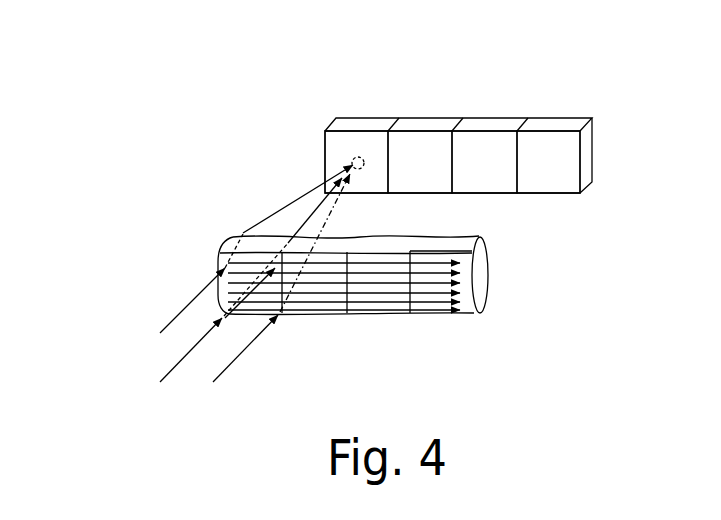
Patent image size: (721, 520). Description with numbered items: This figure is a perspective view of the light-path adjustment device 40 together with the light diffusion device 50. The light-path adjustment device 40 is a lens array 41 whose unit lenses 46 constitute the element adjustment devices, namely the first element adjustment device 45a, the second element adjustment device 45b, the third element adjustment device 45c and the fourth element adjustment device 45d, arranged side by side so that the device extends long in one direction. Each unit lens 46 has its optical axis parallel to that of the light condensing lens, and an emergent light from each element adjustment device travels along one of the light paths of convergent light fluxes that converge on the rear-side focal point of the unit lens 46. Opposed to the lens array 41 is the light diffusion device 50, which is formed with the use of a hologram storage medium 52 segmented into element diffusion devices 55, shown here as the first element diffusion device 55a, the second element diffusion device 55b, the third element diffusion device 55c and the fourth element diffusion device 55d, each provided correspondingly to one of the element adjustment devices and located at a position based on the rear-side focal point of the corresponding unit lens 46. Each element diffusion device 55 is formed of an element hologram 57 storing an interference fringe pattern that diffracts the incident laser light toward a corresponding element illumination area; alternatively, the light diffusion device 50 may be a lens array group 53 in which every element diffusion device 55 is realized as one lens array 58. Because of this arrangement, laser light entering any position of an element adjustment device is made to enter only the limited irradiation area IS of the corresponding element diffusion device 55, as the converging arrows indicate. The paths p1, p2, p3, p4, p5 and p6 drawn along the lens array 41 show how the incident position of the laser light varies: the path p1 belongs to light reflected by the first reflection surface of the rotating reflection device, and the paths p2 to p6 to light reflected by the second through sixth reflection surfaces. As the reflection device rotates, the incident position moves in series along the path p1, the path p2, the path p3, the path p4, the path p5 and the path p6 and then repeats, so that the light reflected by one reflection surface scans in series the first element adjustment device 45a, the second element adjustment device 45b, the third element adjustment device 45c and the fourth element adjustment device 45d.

The light-path adjustment device 40 is at (365, 284).
The lens array 41 is at (365, 284).
The first element adjustment device 45a is at (240, 247).
The second element adjustment device 45b is at (333, 238).
The third element adjustment device 45c is at (390, 240).
The fourth element adjustment device 45d is at (460, 242).
The unit lens 46 is at (212, 241).
The light diffusion device 50 is at (442, 137).
The hologram storage medium 52 is at (442, 137).
The lens array group 53 is at (590, 77).
The element diffusion device 55 is at (440, 155).
The first element diffusion device 55a is at (333, 143).
The second element diffusion device 55b is at (416, 137).
The third element diffusion device 55c is at (482, 143).
The fourth element diffusion device 55d is at (562, 186).
The element hologram 57 is at (440, 155).
The lens array 58 is at (440, 155).
The limited irradiation area IS is at (361, 157).
The path p1 is at (445, 303).
The path p2 is at (417, 310).
The path p3 is at (393, 283).
The path p4 is at (368, 292).
The path p5 is at (333, 304).
The path p6 is at (305, 315).